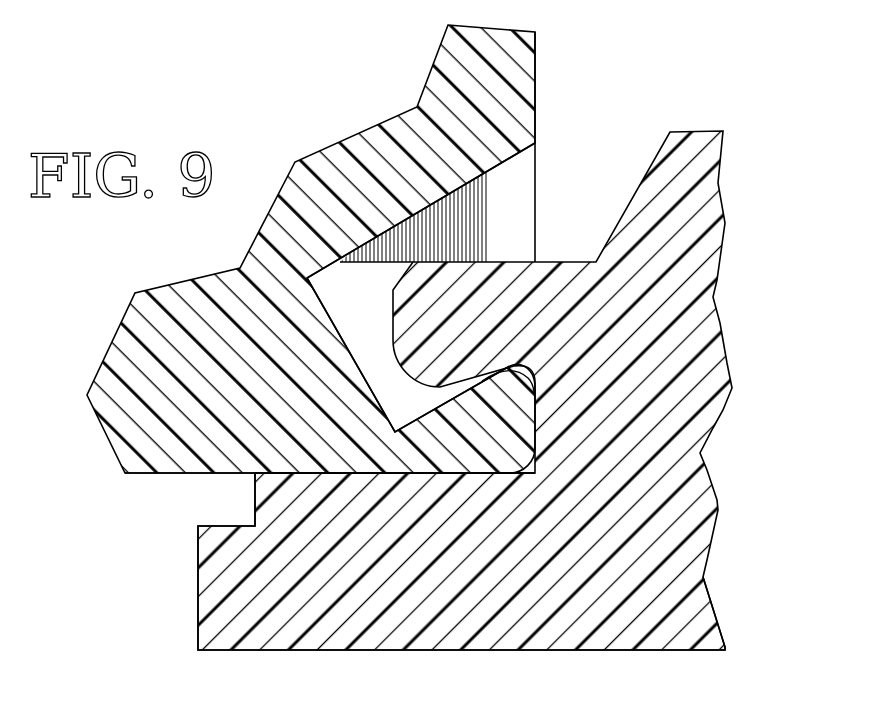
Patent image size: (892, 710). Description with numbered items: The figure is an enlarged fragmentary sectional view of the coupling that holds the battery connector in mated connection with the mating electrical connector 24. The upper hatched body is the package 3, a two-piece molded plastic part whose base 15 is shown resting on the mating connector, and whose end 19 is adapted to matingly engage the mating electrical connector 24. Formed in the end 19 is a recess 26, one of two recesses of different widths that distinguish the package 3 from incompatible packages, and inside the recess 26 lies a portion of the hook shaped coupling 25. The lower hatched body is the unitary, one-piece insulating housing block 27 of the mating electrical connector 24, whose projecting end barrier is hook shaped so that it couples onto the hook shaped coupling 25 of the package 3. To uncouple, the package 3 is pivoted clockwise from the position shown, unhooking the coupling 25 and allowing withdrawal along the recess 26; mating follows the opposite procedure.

The package 3 is at (423, 46).
The base 15 is at (163, 473).
The end 19 is at (537, 65).
The mating electrical connector 24 is at (729, 180).
The hook shaped coupling 25 is at (409, 406).
The recesses 26 is at (490, 169).
The housing block 27 is at (709, 462).